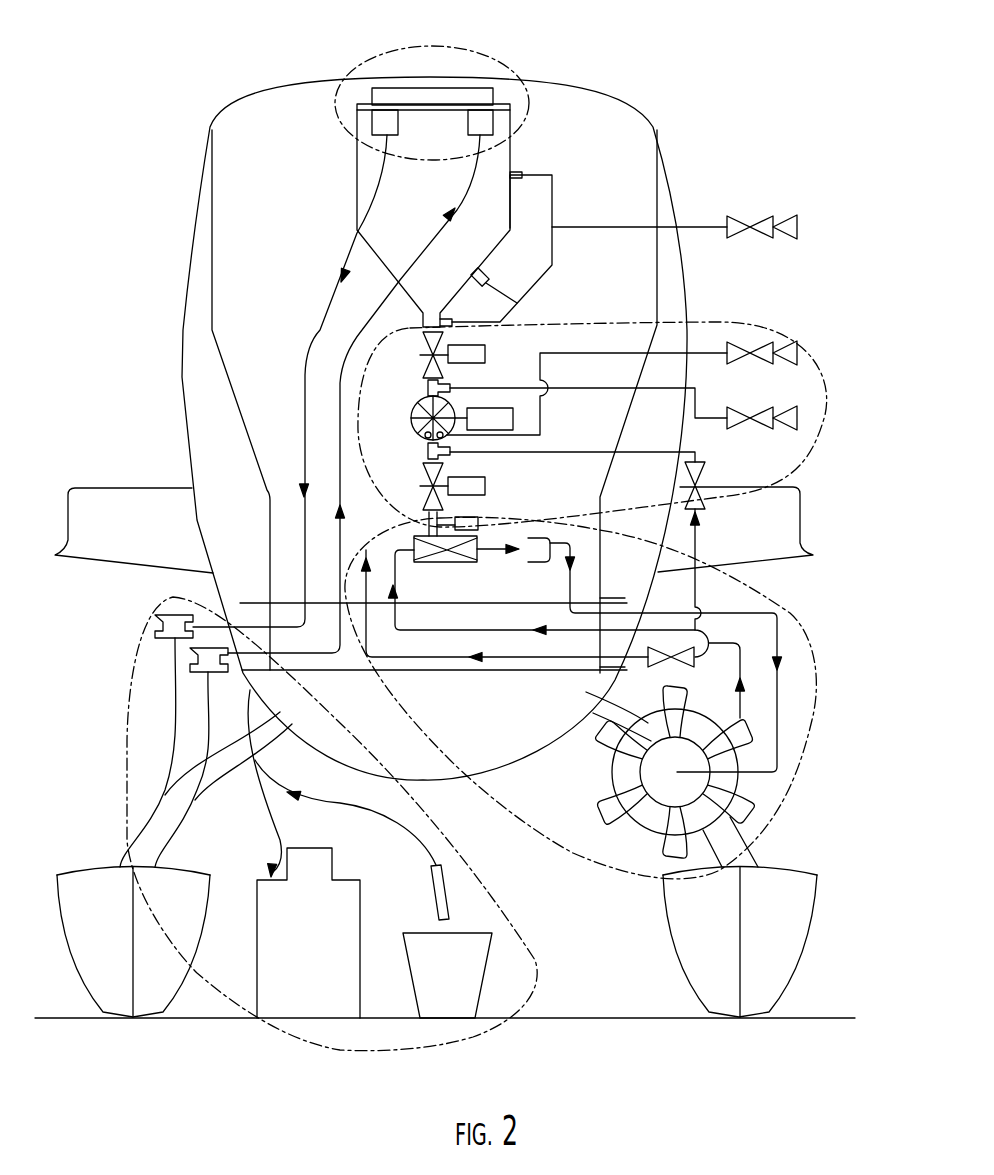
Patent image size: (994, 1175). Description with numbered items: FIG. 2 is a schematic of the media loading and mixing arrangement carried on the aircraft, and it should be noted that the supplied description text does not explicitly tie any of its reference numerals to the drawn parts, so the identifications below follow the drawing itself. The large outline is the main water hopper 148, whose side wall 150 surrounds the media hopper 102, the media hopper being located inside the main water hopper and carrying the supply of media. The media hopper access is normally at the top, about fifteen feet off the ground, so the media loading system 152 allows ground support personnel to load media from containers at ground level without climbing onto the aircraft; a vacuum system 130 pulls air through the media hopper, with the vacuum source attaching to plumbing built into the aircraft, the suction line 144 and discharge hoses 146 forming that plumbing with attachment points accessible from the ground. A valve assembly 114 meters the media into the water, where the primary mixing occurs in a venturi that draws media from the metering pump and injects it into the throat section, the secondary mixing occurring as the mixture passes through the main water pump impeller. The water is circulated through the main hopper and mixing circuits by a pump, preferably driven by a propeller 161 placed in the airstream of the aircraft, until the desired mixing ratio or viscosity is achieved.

The hopper 102 is at (500, 175).
The valve assembly 114 is at (709, 314).
The pneumatic conveying system 130 is at (533, 830).
The fill pipe 144 is at (275, 596).
The discharge hoses 146 is at (310, 737).
The housing 148 is at (257, 95).
The side wall 150 is at (178, 371).
The fill station 152 is at (481, 44).
The blower 161 is at (836, 648).